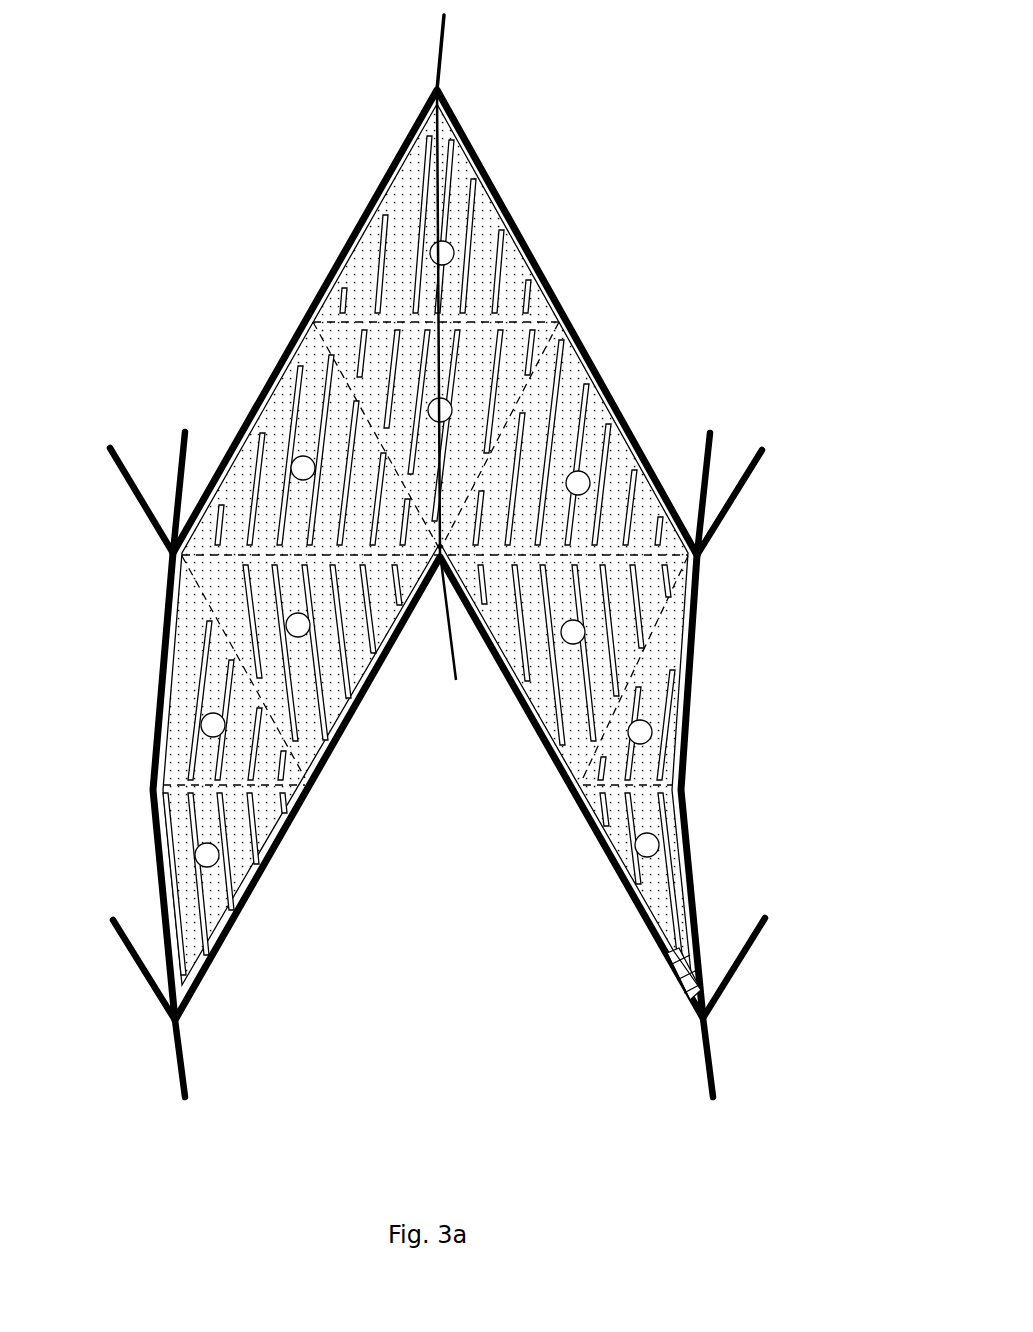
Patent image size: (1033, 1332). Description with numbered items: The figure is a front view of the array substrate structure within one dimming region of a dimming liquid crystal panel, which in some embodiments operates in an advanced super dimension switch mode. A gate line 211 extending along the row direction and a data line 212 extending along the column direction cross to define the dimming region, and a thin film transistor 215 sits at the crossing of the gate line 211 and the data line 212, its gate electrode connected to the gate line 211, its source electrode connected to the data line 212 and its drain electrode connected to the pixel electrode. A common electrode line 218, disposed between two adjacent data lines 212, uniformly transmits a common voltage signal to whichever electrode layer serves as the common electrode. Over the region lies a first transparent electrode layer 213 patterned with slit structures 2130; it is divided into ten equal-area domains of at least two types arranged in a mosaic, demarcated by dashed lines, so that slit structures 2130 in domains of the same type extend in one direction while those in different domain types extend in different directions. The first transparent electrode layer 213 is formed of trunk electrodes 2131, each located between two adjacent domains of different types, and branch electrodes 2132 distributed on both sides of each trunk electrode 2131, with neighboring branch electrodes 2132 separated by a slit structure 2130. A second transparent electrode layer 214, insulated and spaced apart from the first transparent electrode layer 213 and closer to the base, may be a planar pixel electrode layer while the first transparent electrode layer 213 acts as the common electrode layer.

The common electrode line 218 is at (440, 50).
The second transparent electrode layer 214 is at (520, 228).
The first transparent electrode layer 213 is at (543, 297).
The gate line 211 is at (625, 413).
The slit structure 2130 is at (378, 238).
The branch electrode 2132 is at (360, 288).
The trunk electrode 2131 is at (360, 322).
The data line 212 is at (155, 712).
The thin film transistor 215 is at (683, 993).